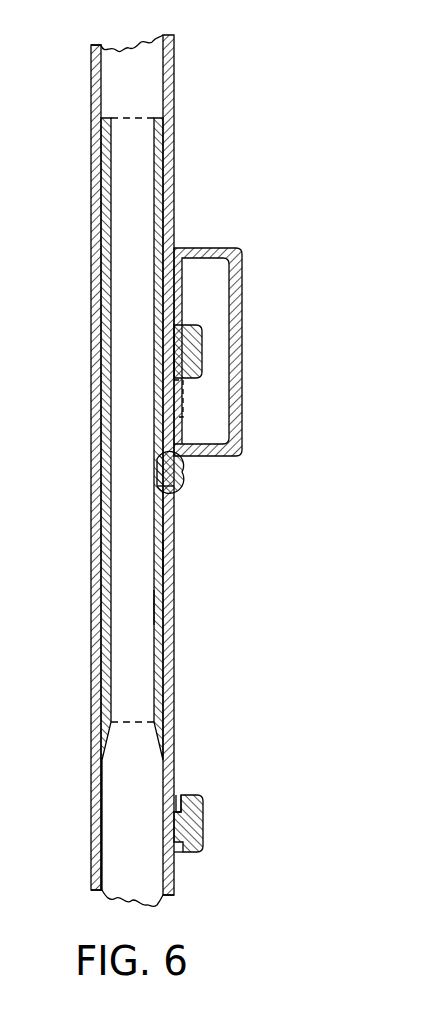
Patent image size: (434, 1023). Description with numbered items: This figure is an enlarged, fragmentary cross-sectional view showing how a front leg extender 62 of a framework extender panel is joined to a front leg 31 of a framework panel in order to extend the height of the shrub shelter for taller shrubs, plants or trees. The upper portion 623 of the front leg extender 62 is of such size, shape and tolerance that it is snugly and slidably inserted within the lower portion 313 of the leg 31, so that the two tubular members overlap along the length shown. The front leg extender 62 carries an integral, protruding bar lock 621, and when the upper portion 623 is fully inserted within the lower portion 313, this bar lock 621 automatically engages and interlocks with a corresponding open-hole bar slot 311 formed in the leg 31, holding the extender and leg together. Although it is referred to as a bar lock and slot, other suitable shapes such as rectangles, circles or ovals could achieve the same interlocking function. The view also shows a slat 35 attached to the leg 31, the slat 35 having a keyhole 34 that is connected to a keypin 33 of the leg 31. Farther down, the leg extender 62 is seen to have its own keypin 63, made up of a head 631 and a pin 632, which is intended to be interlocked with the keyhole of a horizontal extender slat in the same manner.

The front leg 31 is at (174, 80).
The slat 35 is at (242, 290).
The keypin 33 is at (206, 347).
The keyhole 34 is at (188, 397).
The bar lock 621 is at (180, 470).
The bar slot 311 is at (168, 486).
The lower portion 313 is at (165, 558).
The upper portion 623 is at (158, 608).
The pin 632 is at (179, 806).
The front leg extender 62 is at (91, 820).
The head 631 is at (203, 827).
The keypin 63 is at (207, 858).